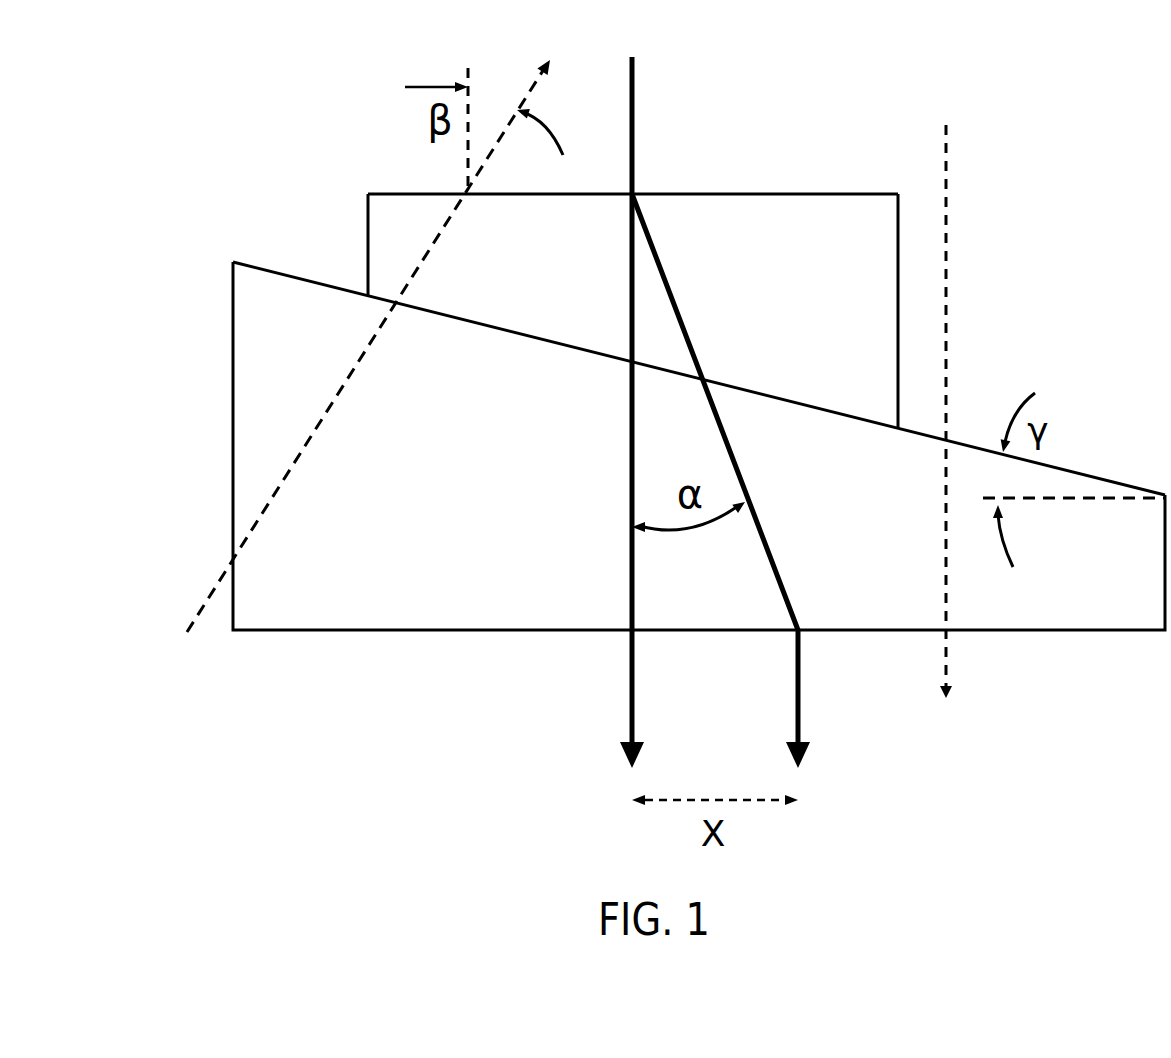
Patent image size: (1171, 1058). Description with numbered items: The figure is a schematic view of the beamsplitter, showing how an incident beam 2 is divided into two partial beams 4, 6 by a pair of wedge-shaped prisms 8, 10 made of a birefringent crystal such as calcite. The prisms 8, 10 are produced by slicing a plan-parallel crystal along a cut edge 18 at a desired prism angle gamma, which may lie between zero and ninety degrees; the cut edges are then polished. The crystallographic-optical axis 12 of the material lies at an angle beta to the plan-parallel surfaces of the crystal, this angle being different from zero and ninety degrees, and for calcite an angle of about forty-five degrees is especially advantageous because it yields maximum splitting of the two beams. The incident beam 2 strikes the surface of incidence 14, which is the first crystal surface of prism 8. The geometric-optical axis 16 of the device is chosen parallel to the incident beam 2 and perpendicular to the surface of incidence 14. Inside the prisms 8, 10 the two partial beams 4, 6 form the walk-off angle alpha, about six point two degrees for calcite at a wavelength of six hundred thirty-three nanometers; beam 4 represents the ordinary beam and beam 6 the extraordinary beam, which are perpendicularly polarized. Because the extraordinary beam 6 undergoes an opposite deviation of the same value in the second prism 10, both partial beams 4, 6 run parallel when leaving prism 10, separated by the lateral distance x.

The incident beam 2 is at (638, 130).
The partial beam (ordinary beam) 4 is at (630, 688).
The partial beam (extraordinary beam) 6 is at (802, 720).
The prism 8 is at (868, 262).
The prism 10 is at (315, 603).
The crystallographic-optical axis 12 is at (407, 282).
The surface of incidence 14 is at (773, 192).
The geometric-optical axis 16 is at (946, 368).
The cut edge 18 is at (512, 335).